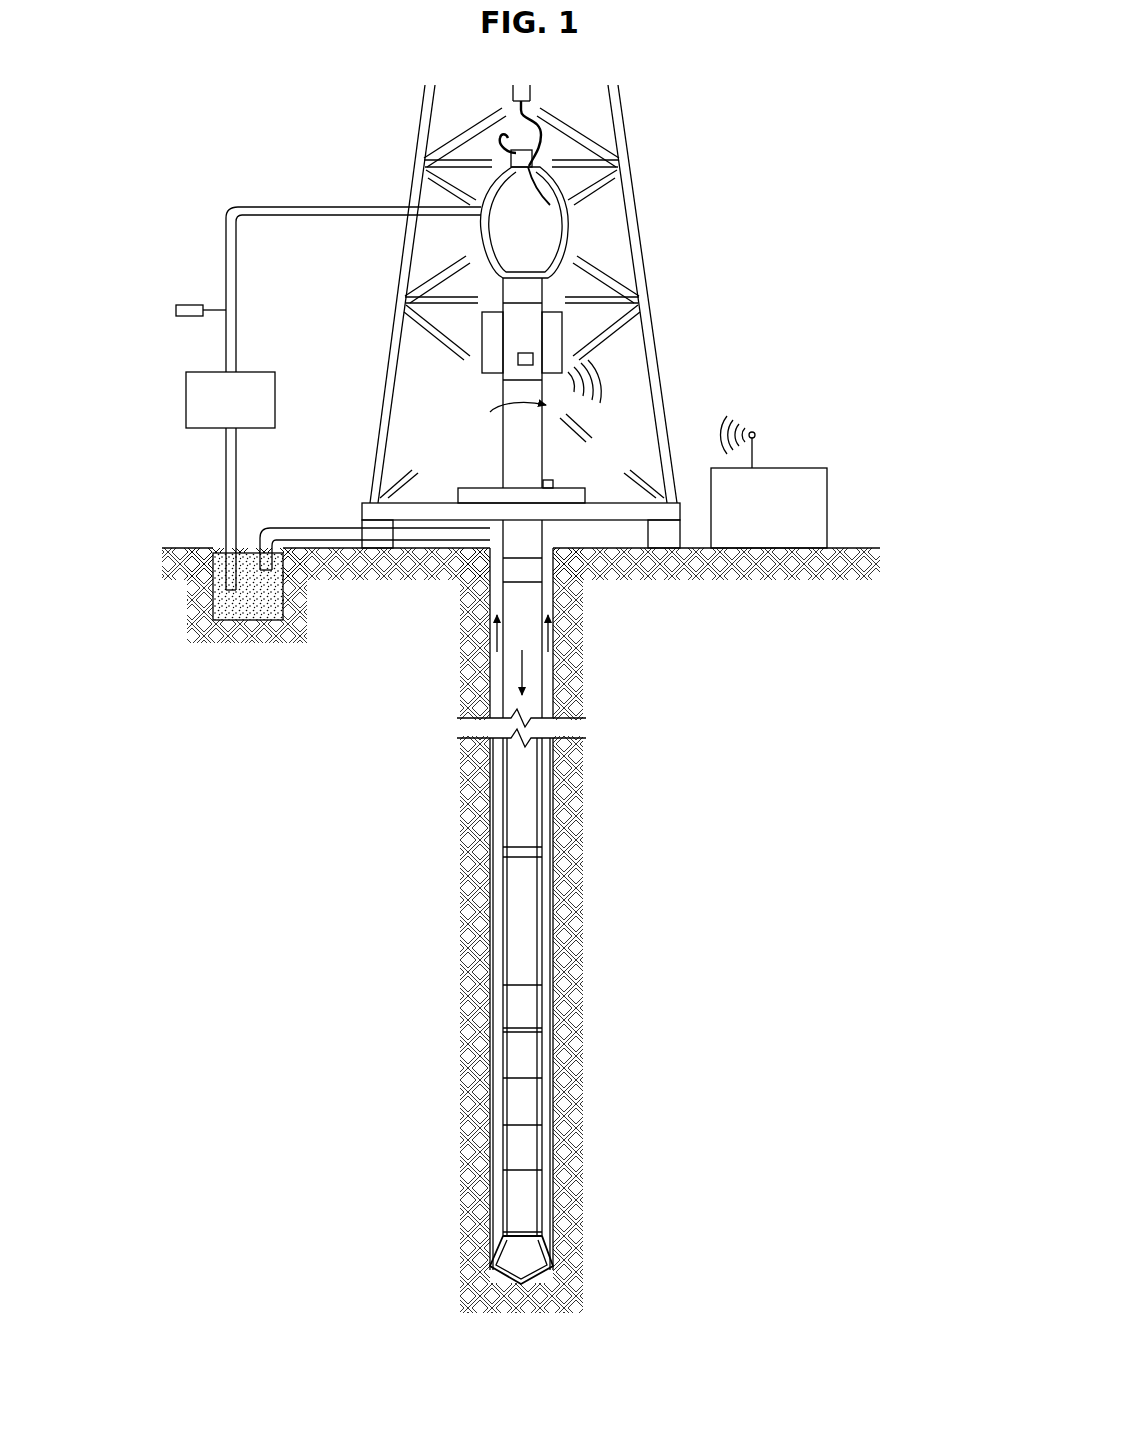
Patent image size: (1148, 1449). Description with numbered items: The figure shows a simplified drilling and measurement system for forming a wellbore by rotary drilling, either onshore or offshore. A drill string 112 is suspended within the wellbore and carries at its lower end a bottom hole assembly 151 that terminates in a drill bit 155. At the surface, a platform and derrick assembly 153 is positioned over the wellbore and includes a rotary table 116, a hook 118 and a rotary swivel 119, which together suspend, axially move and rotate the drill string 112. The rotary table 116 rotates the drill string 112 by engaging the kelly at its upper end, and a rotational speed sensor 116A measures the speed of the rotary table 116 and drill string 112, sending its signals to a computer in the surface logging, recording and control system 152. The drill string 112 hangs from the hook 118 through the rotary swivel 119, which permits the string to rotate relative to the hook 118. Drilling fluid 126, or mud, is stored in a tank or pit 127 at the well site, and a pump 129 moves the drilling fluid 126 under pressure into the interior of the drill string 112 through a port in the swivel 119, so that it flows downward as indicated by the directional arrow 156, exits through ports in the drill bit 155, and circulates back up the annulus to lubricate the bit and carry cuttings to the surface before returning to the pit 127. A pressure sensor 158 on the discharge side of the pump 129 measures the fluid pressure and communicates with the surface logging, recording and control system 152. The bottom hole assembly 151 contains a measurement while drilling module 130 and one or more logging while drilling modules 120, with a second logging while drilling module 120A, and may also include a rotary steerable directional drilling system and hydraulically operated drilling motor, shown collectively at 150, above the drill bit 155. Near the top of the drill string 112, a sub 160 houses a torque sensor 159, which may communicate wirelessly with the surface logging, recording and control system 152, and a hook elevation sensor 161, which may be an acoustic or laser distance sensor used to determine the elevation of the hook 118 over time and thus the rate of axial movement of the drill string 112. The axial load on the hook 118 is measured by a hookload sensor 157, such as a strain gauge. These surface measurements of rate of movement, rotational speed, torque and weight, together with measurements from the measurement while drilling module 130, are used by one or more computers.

The hook 118 is at (534, 128).
The hookload sensor 157 is at (546, 180).
The platform and derrick assembly 153 is at (768, 144).
The rotary swivel 119 is at (507, 235).
The hook elevation sensor 161 is at (476, 330).
The sub 160 is at (531, 333).
The torque sensor 159 is at (536, 359).
The pressure sensor 158 is at (190, 305).
The pump 129 is at (256, 372).
The drill string 112 is at (515, 446).
The rotary table 116 is at (480, 488).
The rotational speed sensor 116A is at (548, 480).
The surface logging, recording and control system 152 is at (750, 521).
The tank or pit 127 is at (246, 524).
The drilling fluid 126 is at (246, 605).
The directional arrow 156 is at (520, 668).
The bottom hole assembly 151 is at (523, 1133).
The logging while drilling module 120 is at (531, 1050).
The measurement while drilling module 130 is at (531, 1098).
The second logging while drilling module 120A is at (531, 1147).
The rotary steerable directional drilling system and drilling motor 150 is at (531, 1192).
The drill bit 155 is at (533, 1254).